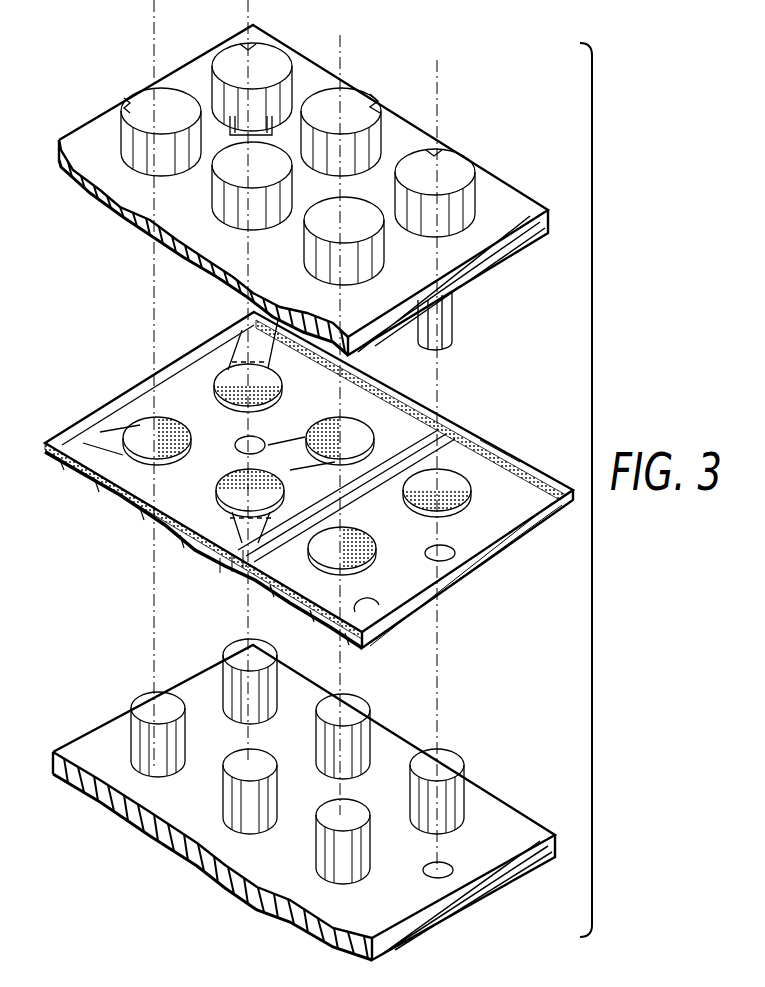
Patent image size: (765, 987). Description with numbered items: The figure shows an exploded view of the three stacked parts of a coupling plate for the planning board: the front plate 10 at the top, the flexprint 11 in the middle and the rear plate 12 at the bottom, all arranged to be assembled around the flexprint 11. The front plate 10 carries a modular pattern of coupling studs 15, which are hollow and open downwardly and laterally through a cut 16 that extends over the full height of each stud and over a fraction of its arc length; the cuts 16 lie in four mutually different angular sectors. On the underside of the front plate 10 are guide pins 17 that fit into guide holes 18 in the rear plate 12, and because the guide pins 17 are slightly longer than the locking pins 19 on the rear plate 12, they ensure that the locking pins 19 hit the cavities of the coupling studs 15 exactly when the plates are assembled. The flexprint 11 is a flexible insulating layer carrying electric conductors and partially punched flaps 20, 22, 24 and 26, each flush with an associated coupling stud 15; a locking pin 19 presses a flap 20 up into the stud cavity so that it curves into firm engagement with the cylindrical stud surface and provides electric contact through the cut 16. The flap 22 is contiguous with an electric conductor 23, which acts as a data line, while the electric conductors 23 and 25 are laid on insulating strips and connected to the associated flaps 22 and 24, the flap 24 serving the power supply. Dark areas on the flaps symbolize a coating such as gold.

The front plate 10 is at (512, 195).
The flexprint 11 is at (436, 590).
The rear plate 12 is at (533, 860).
The coupling studs 15 is at (350, 102).
The cut 16 is at (392, 108).
The guide pins 17 is at (452, 328).
The guide holes 18 is at (455, 866).
The locking pins 19 is at (372, 718).
The flap 20 is at (355, 433).
The flap 22 is at (243, 372).
The electric conductor 23 is at (522, 466).
The flap 24 is at (268, 505).
The electric conductor 25 is at (380, 618).
The flap 26 is at (137, 443).